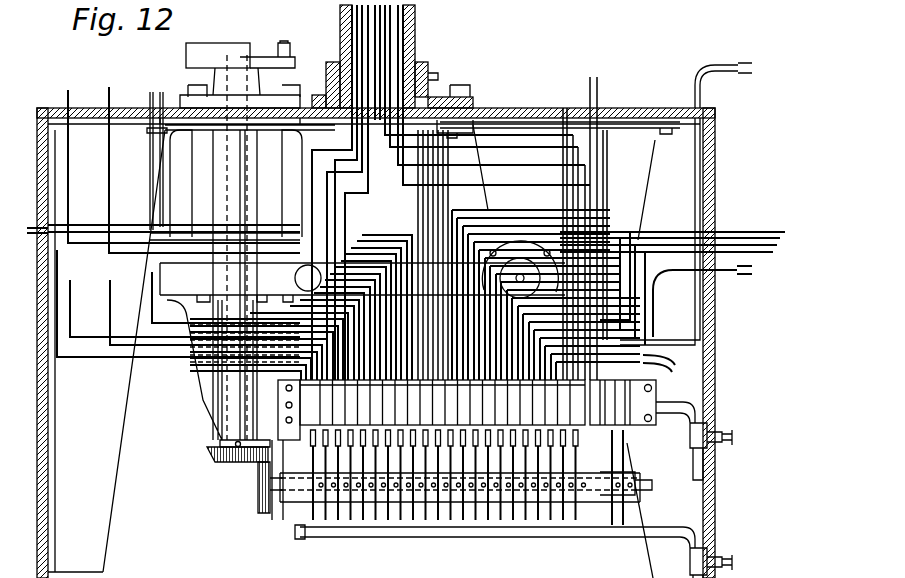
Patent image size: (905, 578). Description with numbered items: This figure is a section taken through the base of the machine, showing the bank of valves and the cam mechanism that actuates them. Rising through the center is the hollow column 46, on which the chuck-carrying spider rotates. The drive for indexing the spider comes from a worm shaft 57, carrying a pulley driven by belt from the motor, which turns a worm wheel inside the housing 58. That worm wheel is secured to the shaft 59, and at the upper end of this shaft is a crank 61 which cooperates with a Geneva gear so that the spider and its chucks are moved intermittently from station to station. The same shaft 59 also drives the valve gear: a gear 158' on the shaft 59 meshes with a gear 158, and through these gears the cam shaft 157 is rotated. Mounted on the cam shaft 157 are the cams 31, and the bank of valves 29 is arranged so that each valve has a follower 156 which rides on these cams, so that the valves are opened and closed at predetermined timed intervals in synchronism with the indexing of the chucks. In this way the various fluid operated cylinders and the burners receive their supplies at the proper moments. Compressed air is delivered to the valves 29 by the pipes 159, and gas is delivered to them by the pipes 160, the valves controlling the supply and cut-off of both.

The crank 61 is at (264, 62).
The hollow column 46 is at (418, 33).
The housing 58 is at (163, 270).
The worm shaft 57 is at (295, 275).
The valves 29 is at (299, 386).
The shaft 59 is at (225, 400).
The gear 158' is at (220, 467).
The gear 158 is at (221, 481).
The follower 156 is at (398, 446).
The cams 31 is at (535, 523).
The pipes 159 is at (597, 537).
The cam shaft 157 is at (645, 490).
The pipes 160 is at (668, 407).